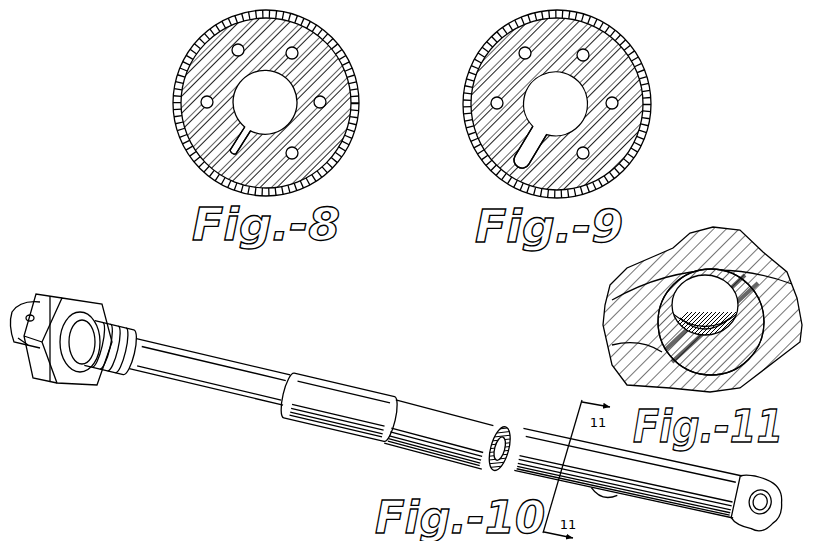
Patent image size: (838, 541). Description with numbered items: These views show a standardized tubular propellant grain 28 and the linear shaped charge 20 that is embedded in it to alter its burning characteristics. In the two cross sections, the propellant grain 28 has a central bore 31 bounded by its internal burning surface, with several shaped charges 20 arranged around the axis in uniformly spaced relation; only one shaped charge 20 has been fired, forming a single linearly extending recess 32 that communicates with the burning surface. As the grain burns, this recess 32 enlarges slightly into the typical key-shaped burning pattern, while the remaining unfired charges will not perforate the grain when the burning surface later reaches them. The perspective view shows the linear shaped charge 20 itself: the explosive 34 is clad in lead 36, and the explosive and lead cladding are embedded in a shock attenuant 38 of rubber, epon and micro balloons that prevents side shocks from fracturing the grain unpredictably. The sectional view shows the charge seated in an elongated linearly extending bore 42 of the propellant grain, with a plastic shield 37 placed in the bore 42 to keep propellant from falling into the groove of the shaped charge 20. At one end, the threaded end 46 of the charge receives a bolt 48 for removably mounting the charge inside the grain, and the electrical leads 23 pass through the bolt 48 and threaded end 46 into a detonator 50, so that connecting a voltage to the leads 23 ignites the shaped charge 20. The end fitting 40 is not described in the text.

In FIG. 10, the linear shaped charge 20 is at (324, 366).
In FIG. 10, the electrical leads 23 is at (25, 314).
In FIG. 8, the propellant grain 28 is at (324, 31).
In FIG. 9, the propellant grain 28 is at (622, 33).
In FIG. 8, the bore 31 is at (276, 98).
In FIG. 9, the bore 31 is at (567, 100).
In FIG. 8, the recess 32 is at (246, 130).
In FIG. 9, the recess 32 is at (539, 135).
In FIG. 11, the explosive 34 is at (680, 289).
In FIG. 10, the explosive 34 is at (773, 487).
In FIG. 11, the lead 36 is at (782, 279).
In FIG. 11, the shield 37 is at (684, 251).
In FIG. 11, the shock attenuant 38 is at (628, 345).
In FIG. 10, the end cap 40 is at (777, 521).
In FIG. 11, the bore 42 is at (758, 371).
In FIG. 10, the threaded end 46 is at (113, 326).
In FIG. 10, the bolt 48 is at (84, 304).
In FIG. 10, the detonator 50 is at (354, 386).